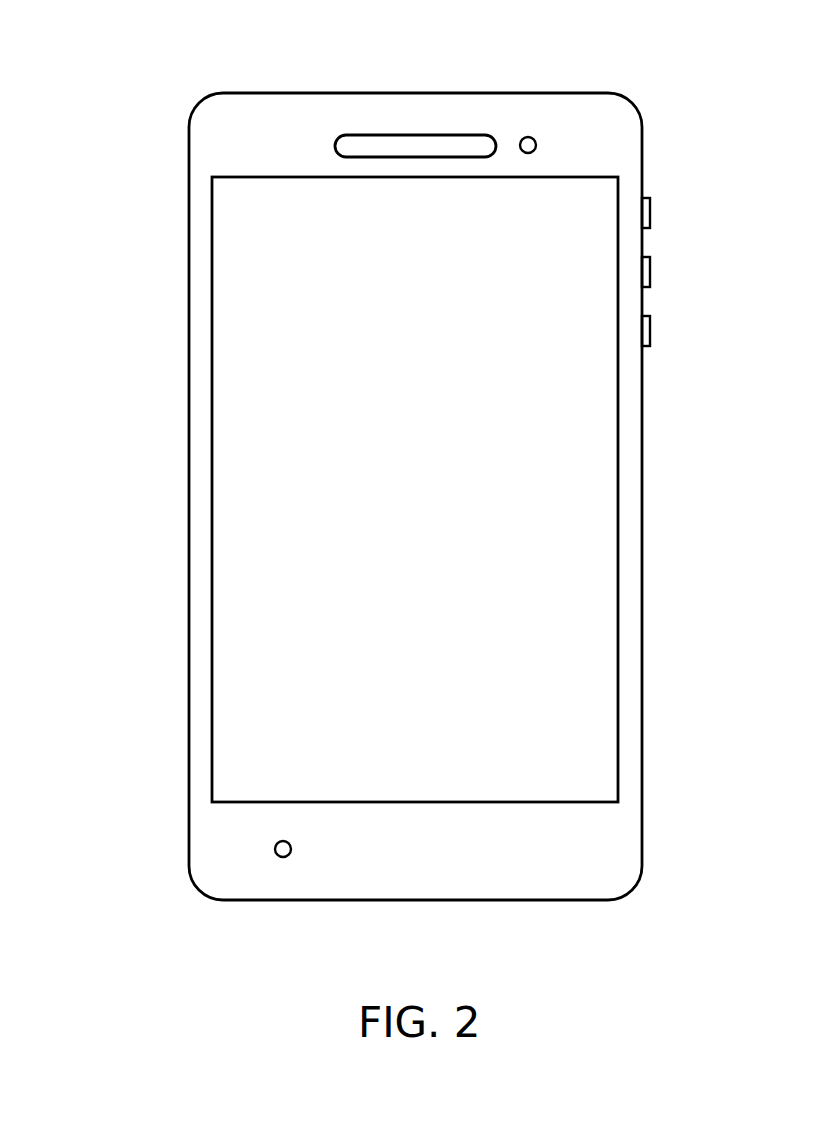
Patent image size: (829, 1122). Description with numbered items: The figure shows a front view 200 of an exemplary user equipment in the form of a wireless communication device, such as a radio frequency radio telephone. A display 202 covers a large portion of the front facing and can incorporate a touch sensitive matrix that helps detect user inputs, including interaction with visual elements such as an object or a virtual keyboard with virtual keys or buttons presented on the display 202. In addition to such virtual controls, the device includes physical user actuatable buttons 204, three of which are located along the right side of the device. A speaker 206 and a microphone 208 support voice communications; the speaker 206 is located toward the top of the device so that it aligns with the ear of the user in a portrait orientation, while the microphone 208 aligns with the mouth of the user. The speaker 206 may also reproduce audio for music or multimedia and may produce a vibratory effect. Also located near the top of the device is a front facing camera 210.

The front view 200 is at (155, 75).
The display 202 is at (593, 517).
The physical user actuatable buttons 204 is at (650, 213).
The speaker 206 is at (415, 135).
The microphone 208 is at (283, 857).
The front facing camera 210 is at (527, 137).